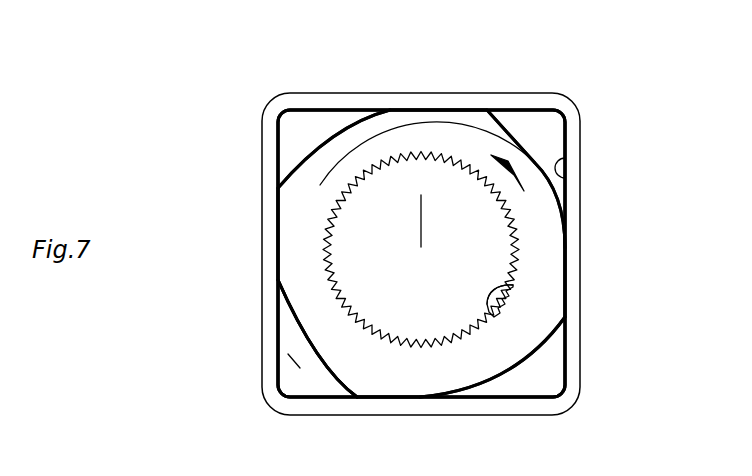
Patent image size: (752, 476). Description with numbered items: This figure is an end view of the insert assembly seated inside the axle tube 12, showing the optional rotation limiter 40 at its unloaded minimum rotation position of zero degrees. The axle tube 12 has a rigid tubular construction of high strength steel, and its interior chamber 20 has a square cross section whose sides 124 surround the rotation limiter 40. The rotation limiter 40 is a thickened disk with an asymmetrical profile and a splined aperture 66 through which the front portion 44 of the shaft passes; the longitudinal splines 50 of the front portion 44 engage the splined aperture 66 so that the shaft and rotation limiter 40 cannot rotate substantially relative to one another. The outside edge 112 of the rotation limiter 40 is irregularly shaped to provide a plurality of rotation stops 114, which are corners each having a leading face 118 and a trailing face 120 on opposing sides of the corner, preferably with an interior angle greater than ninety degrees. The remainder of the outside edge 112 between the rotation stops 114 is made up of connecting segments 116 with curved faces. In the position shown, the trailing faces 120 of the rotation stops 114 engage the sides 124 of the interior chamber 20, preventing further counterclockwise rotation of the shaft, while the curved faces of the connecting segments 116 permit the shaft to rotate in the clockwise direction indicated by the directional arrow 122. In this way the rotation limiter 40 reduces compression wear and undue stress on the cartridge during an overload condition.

The axle tube 12 is at (528, 93).
The interior chamber 20 is at (293, 361).
The rotation limiter 40 is at (466, 370).
The front portion 44 is at (382, 268).
The longitudinal splines 50 is at (513, 287).
The splined aperture 66 is at (522, 284).
The outside edge 112 is at (325, 363).
The rotation stops 114 is at (487, 93).
The connecting segments 116 is at (330, 137).
The leading face 118 is at (537, 163).
The trailing face 120 is at (453, 110).
The directional arrow 122 is at (397, 133).
The sides 124 is at (557, 155).